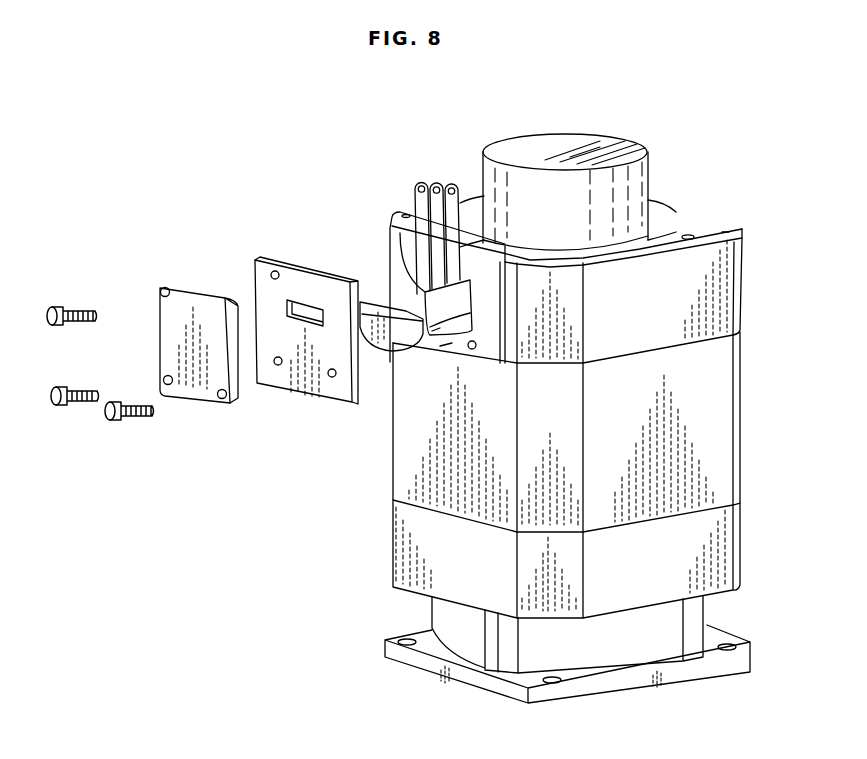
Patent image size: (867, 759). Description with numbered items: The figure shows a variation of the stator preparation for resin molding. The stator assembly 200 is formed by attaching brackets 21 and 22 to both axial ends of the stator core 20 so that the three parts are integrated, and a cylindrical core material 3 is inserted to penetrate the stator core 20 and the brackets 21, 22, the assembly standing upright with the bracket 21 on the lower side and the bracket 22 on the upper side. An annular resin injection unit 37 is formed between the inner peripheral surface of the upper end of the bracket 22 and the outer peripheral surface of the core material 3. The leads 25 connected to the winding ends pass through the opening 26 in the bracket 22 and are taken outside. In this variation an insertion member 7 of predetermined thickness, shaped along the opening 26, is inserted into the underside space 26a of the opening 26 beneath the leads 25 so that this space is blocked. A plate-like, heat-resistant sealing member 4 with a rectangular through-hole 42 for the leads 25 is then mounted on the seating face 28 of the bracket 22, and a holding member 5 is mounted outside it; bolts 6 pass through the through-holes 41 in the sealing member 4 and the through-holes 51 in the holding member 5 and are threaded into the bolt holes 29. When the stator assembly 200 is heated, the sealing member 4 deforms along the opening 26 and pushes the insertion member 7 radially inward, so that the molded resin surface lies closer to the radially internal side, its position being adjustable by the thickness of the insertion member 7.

The core material 3 is at (637, 182).
The sealing member 4 is at (291, 330).
The holding member 5 is at (189, 343).
The bolts 6 is at (80, 300).
The insertion member 7 is at (380, 352).
The stator core 20 is at (742, 412).
The bracket 21 is at (738, 555).
The bracket 22 is at (563, 343).
The leads 25 is at (433, 182).
The opening 26 is at (416, 343).
The underside space 26a is at (407, 278).
The seating face 28 is at (445, 344).
The bolt holes 29 is at (472, 347).
The resin injection unit 37 is at (668, 228).
The through-holes 41 is at (271, 269).
The through-hole 42 is at (297, 302).
The through-holes 51 is at (163, 287).
The stator assembly 200 is at (325, 561).